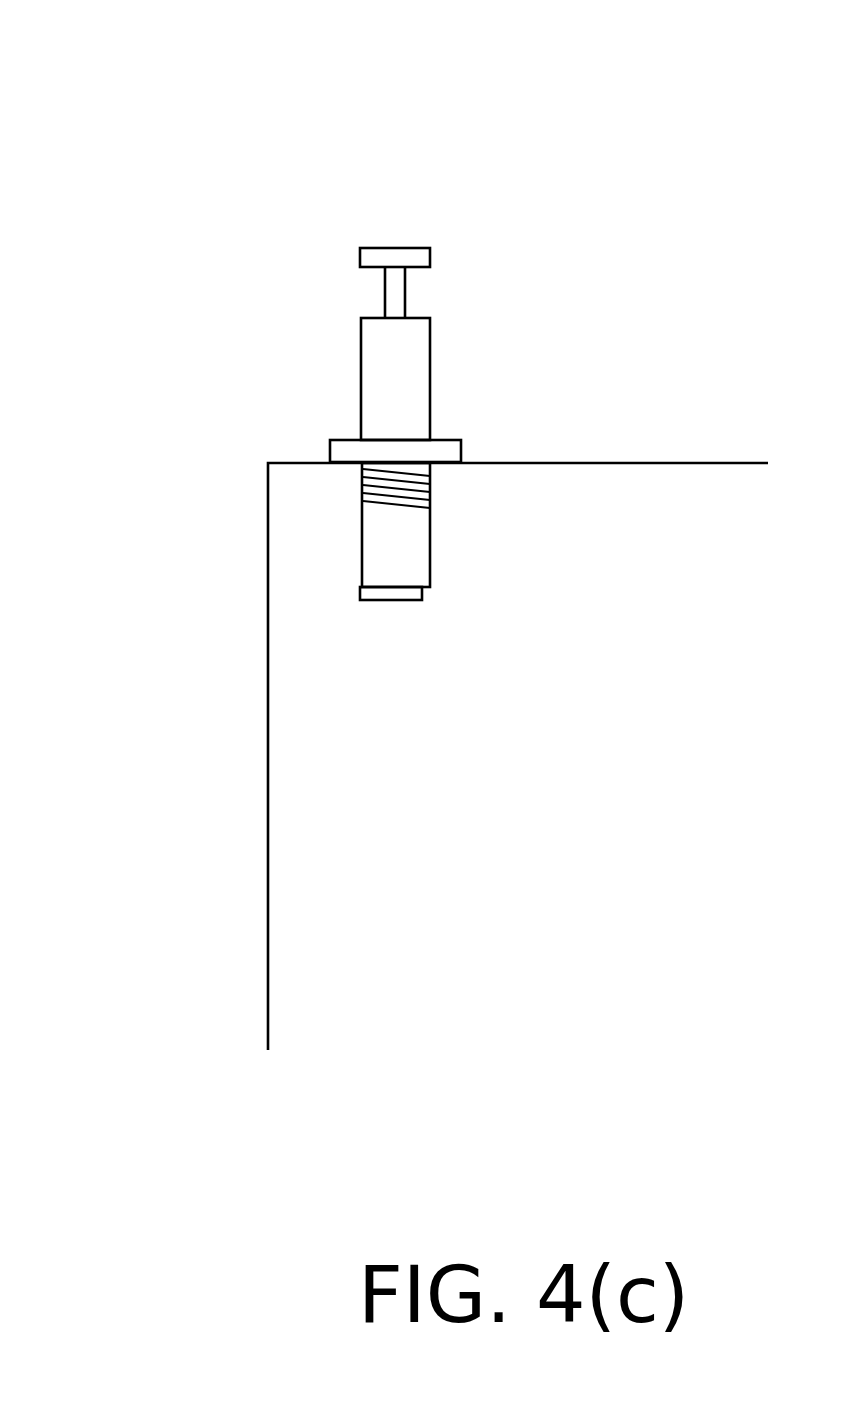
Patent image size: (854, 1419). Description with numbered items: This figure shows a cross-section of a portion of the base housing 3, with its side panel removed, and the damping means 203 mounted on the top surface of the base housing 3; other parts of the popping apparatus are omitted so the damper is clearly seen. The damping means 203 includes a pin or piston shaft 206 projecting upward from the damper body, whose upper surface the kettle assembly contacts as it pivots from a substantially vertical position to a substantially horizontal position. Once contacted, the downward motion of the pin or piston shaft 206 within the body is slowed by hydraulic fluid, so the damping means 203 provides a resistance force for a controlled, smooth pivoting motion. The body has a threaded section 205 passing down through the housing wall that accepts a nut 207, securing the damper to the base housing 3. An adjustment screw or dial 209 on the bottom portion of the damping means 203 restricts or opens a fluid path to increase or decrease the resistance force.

The base housing 3 is at (413, 840).
The damping means 203 is at (211, 95).
The threaded section 205 is at (432, 490).
The pin or piston shaft 206 is at (405, 283).
The nut 207 is at (461, 461).
The adjustment screw or dial 209 is at (423, 592).